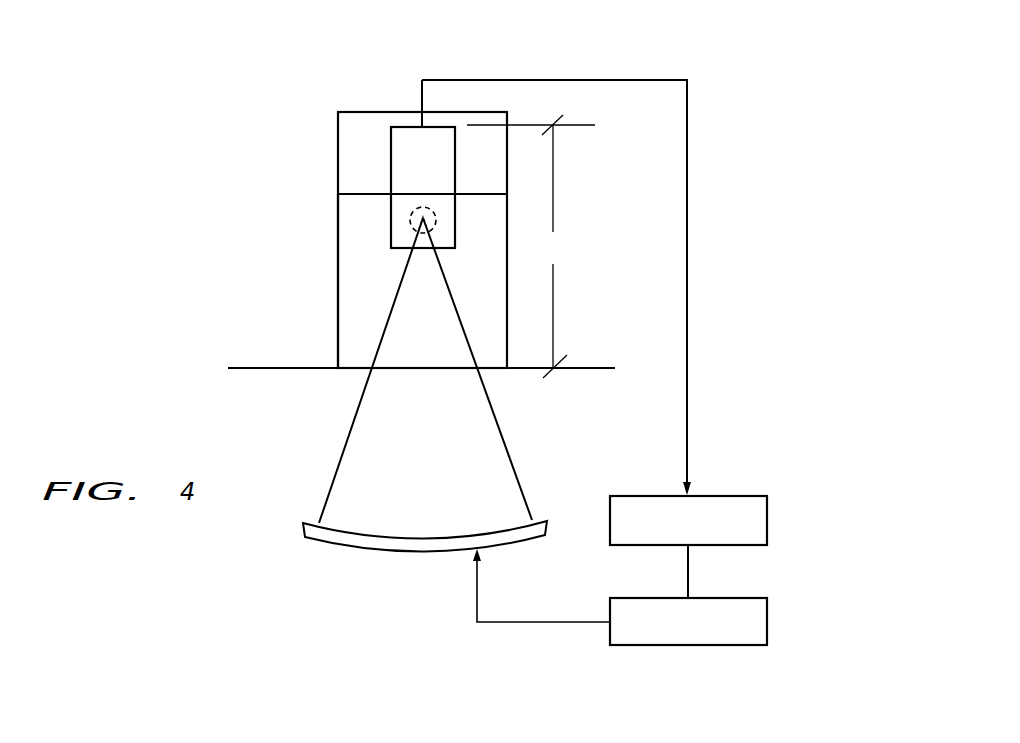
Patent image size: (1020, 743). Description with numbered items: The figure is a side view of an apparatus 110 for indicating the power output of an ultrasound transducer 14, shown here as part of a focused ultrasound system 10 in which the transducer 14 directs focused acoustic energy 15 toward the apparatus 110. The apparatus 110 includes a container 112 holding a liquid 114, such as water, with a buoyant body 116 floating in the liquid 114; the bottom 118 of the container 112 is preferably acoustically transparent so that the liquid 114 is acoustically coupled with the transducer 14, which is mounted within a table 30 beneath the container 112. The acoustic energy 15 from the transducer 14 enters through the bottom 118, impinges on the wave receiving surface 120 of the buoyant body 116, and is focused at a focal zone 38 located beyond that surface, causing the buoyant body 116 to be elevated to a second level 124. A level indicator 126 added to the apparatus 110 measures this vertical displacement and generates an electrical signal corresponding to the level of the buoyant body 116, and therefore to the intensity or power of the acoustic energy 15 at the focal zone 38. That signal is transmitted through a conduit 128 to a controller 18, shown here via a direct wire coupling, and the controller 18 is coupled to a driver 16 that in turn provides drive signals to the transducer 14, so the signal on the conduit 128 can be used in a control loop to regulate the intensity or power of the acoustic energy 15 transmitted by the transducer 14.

The focused ultrasound system 10 is at (722, 426).
The ultrasound transducer 14 is at (318, 552).
The acoustic energy 15 is at (503, 432).
The driver 16 is at (632, 597).
The controller 18 is at (767, 518).
The table 30 is at (585, 368).
The focal zone 38 is at (410, 217).
The apparatus 110 is at (592, 185).
The container 112 is at (338, 137).
The liquid 114 is at (365, 230).
The buoyant body 116 is at (391, 158).
The bottom of the container 118 is at (357, 368).
The wave receiving surface 120 is at (391, 250).
The second level 124 is at (556, 251).
The level indicator 126 is at (420, 123).
The conduit 128 is at (603, 80).